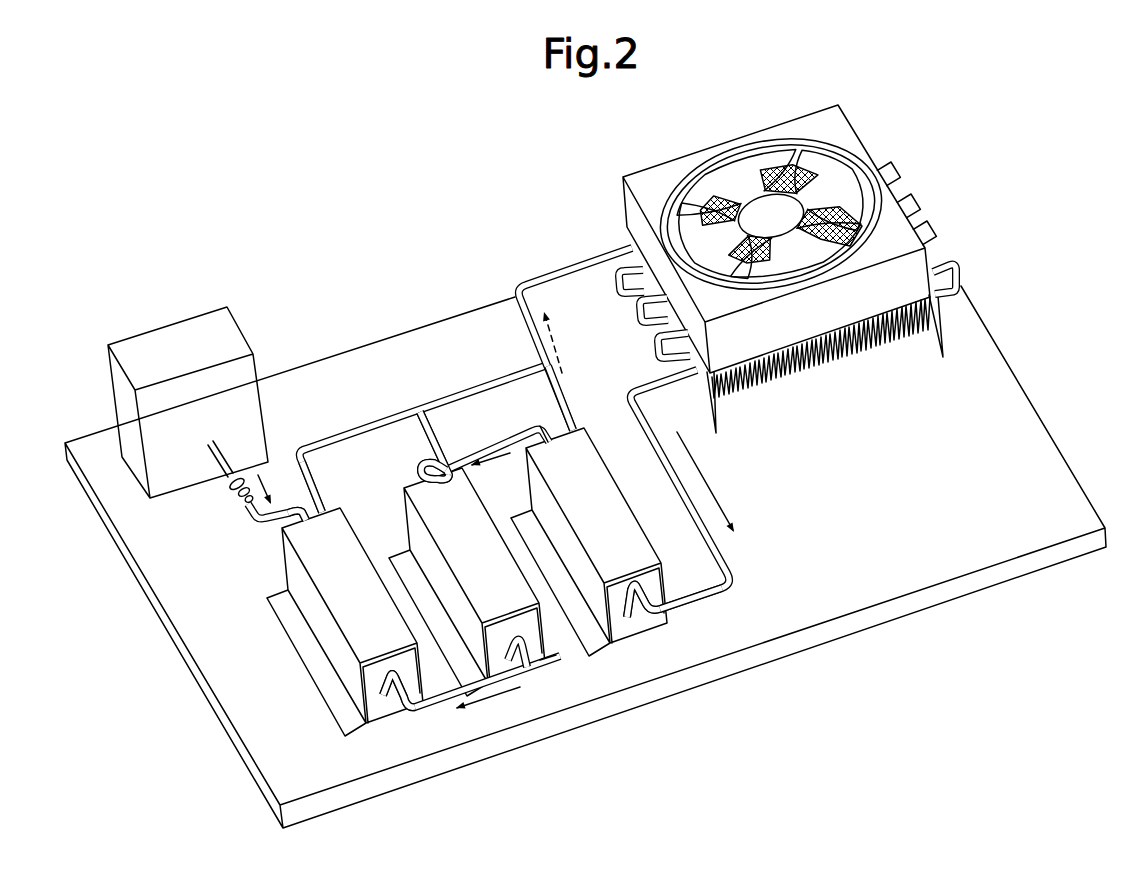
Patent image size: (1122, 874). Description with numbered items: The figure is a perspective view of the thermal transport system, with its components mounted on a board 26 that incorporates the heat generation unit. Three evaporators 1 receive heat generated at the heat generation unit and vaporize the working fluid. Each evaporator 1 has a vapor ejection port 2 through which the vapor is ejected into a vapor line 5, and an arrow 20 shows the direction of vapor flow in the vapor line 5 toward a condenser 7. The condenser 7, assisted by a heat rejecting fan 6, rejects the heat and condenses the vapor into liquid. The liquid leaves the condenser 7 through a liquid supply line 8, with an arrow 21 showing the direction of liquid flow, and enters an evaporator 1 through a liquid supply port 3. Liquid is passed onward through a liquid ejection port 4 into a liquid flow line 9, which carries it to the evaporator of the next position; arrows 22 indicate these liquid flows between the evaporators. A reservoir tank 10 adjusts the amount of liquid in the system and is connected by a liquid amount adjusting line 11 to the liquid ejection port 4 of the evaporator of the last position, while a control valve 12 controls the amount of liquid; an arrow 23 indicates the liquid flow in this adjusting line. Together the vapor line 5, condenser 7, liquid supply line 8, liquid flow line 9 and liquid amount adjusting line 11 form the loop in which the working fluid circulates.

The evaporator 1 is at (590, 462).
The vapor ejection port 2 is at (563, 404).
The liquid supply port 3 is at (420, 480).
The liquid ejection port 4 is at (298, 517).
The vapor line 5 is at (377, 422).
The heat rejecting fan 6 is at (810, 122).
The condenser 7 is at (892, 160).
The liquid supply line 8 is at (734, 574).
The liquid flow line 9 is at (474, 452).
The reservoir tank 10 is at (172, 328).
The liquid amount adjusting line 11 is at (259, 520).
The control valve 12 is at (232, 488).
The arrow 20 is at (562, 346).
The arrow 21 is at (714, 492).
The arrows 22 is at (497, 458).
The arrow 23 is at (270, 466).
The board 26 is at (97, 498).